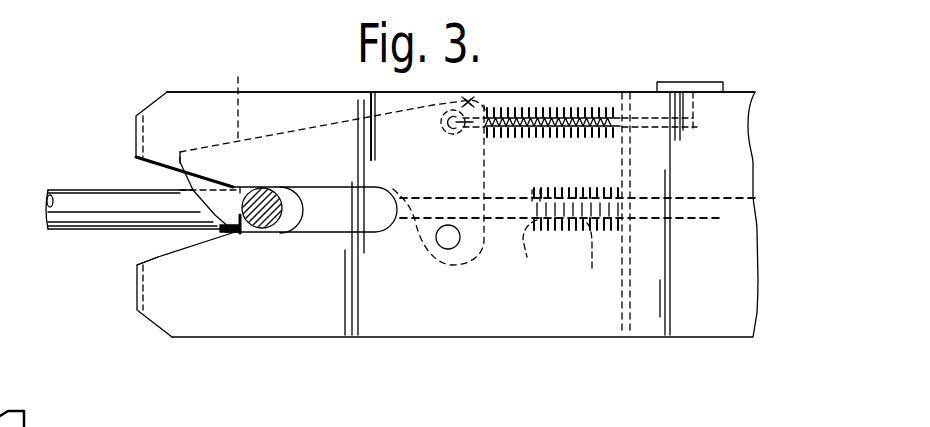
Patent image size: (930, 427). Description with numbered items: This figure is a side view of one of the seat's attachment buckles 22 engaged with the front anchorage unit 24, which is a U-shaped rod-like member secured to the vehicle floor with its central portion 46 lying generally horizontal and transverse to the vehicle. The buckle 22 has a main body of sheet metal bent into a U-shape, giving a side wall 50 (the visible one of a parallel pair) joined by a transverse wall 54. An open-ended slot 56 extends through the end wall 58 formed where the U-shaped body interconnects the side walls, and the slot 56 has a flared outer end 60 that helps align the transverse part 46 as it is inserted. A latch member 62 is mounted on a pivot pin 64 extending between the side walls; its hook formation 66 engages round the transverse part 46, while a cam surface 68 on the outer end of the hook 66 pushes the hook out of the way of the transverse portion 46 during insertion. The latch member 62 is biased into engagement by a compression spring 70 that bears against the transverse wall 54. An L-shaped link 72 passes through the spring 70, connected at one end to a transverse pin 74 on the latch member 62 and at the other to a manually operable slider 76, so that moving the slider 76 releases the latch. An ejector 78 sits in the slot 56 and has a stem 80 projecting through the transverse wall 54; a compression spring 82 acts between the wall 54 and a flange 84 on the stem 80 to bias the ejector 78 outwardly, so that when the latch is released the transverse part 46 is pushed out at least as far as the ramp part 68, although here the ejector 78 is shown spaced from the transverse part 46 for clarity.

The buckle 22 is at (301, 92).
The front anchorage unit 24 is at (78, 222).
The central portion 46 is at (263, 215).
The side wall 50 is at (530, 315).
The transverse wall 54 is at (630, 310).
The open-ended slot 56 is at (287, 222).
The end wall 58 is at (136, 133).
The flared outer end 60 is at (158, 257).
The latch member 62 is at (238, 77).
The pivot pin 64 is at (455, 242).
The hook formation 66 is at (223, 227).
The cam surface 68 is at (215, 218).
The compression spring 70 is at (563, 110).
The L-shaped link 72 is at (487, 100).
The transverse pin 74 is at (470, 101).
The manually operable slider 76 is at (707, 83).
The ejector 78 is at (372, 220).
The stem 80 is at (723, 218).
The compression spring 82 is at (592, 250).
The flange 84 is at (524, 250).